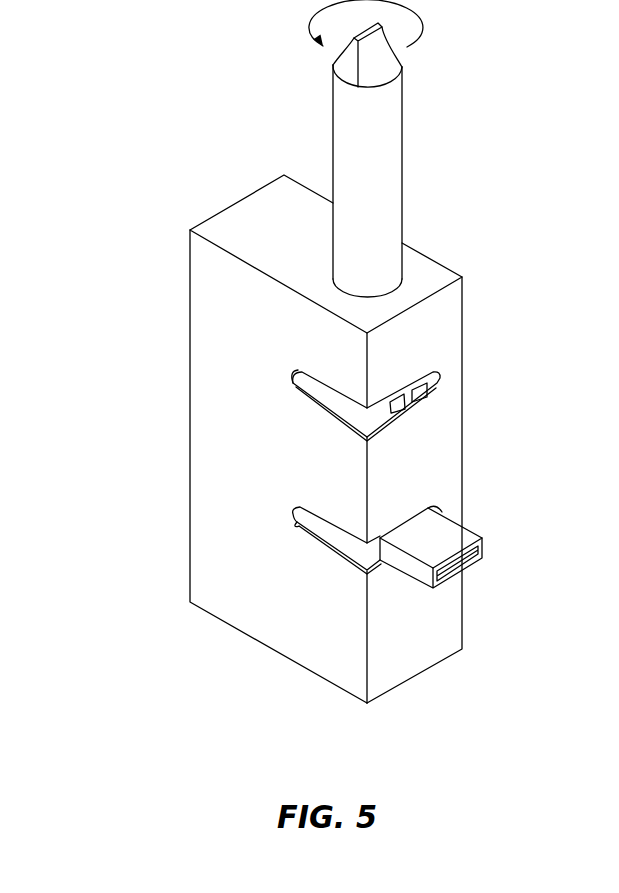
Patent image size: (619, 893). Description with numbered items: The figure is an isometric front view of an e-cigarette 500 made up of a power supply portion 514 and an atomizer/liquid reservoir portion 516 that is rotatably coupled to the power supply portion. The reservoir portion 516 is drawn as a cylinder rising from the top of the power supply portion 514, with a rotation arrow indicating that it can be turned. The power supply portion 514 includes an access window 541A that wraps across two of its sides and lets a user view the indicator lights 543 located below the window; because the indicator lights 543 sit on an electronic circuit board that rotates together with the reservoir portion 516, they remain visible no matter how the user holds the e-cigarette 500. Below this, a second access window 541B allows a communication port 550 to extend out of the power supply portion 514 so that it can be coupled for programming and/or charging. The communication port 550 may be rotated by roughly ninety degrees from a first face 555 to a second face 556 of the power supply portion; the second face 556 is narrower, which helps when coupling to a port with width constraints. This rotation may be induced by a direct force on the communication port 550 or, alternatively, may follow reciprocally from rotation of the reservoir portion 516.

The e-cigarette 500 is at (185, 122).
The power supply portion 514 is at (482, 349).
The atomizer/liquid reservoir portion 516 is at (435, 155).
The access window 541A is at (333, 420).
The second access window 541B is at (328, 554).
The indicator lights 543 is at (402, 412).
The communication port 550 is at (483, 552).
The first face 555 is at (230, 361).
The second face 556 is at (422, 648).